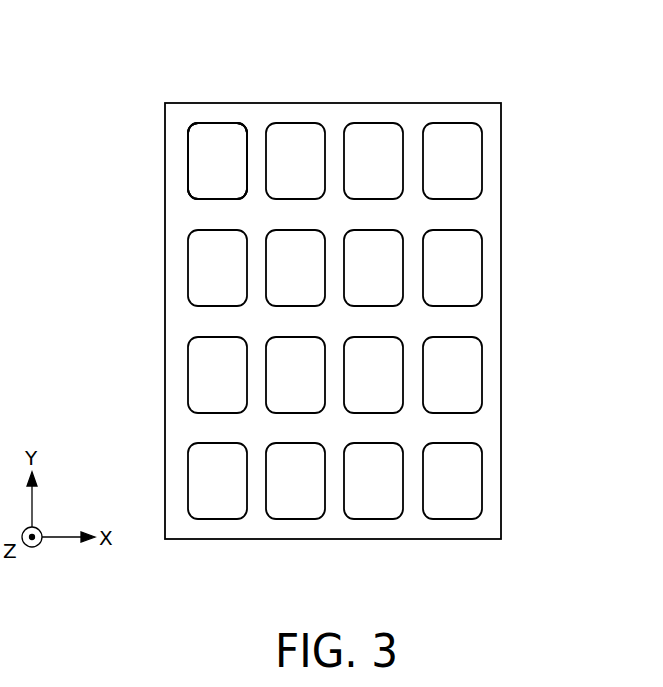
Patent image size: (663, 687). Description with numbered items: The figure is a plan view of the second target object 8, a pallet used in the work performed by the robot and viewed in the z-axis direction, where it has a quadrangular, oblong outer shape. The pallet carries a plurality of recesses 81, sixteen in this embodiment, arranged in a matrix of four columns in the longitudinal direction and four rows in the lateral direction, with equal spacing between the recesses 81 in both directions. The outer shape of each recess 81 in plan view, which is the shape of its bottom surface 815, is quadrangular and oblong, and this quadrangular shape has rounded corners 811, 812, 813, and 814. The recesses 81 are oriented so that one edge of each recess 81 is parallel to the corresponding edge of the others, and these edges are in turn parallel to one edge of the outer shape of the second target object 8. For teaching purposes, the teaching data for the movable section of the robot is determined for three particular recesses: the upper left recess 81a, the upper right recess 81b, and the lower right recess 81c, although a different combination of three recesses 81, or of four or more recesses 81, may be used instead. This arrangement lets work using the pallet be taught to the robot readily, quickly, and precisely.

The second target object 8 is at (506, 139).
The recesses 81 is at (347, 266).
The upper left recess 81a is at (210, 123).
The upper right recess 81b is at (456, 123).
The lower right recess 81c is at (482, 482).
The rounded corner 811 is at (188, 126).
The rounded corner 812 is at (243, 124).
The rounded corner 813 is at (247, 199).
The rounded corner 814 is at (190, 198).
The bottom surface 815 is at (203, 157).